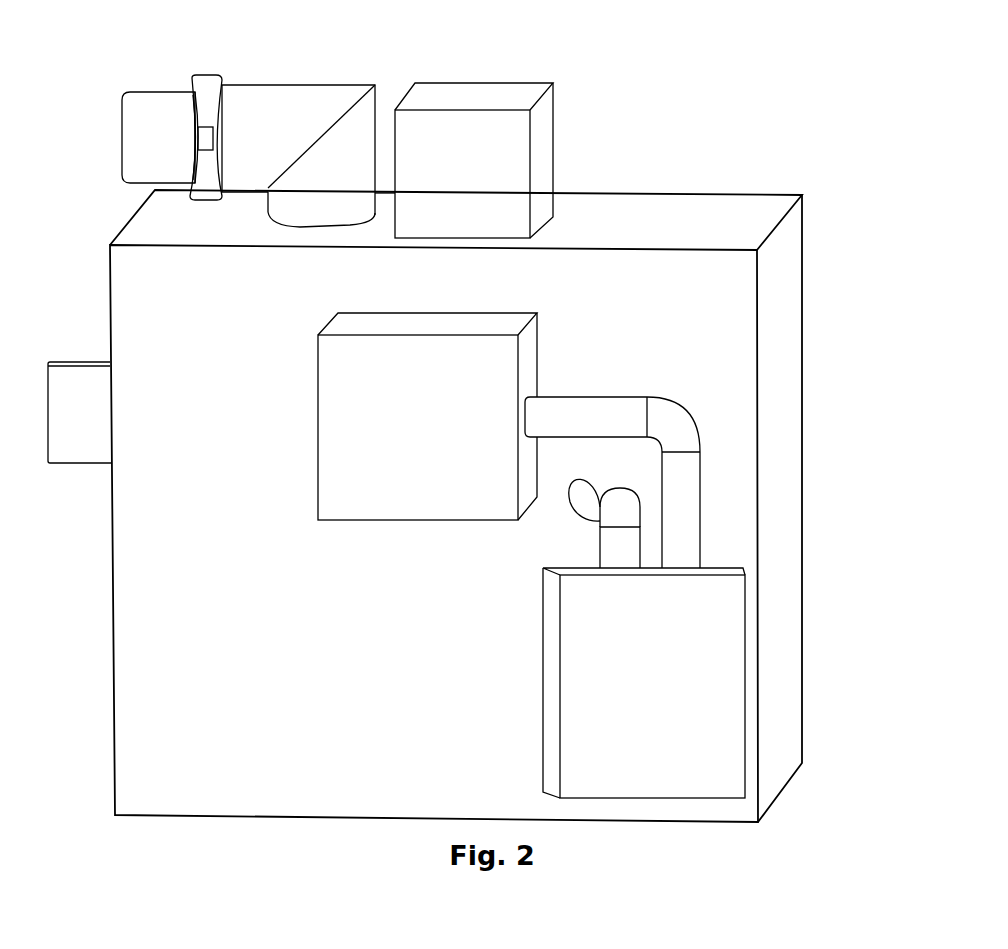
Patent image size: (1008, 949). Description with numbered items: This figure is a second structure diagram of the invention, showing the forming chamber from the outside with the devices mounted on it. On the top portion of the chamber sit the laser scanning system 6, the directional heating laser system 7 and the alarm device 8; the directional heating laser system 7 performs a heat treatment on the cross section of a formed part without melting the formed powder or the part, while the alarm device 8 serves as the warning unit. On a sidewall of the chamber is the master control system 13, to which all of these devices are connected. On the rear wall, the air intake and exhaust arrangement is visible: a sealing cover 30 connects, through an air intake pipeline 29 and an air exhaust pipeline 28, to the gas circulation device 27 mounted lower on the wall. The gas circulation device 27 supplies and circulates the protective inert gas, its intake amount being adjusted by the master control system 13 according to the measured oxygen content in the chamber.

The laser scanning system 6 is at (452, 147).
The directional heating laser system 7 is at (293, 120).
The alarm device 8 is at (217, 85).
The master control system 13 is at (85, 397).
The gas circulation device 27 is at (685, 717).
The air exhaust pipeline 28 is at (620, 547).
The air intake pipeline 29 is at (673, 428).
The sealing cover 30 is at (500, 368).